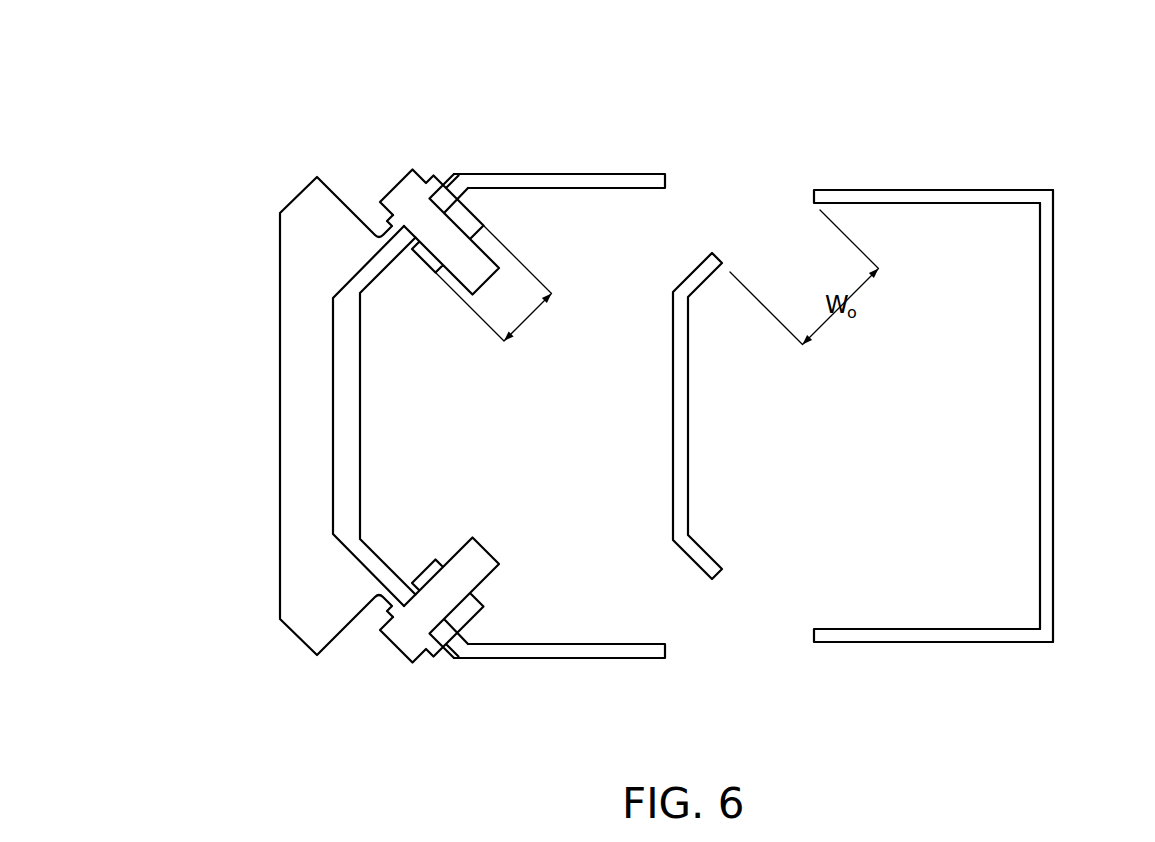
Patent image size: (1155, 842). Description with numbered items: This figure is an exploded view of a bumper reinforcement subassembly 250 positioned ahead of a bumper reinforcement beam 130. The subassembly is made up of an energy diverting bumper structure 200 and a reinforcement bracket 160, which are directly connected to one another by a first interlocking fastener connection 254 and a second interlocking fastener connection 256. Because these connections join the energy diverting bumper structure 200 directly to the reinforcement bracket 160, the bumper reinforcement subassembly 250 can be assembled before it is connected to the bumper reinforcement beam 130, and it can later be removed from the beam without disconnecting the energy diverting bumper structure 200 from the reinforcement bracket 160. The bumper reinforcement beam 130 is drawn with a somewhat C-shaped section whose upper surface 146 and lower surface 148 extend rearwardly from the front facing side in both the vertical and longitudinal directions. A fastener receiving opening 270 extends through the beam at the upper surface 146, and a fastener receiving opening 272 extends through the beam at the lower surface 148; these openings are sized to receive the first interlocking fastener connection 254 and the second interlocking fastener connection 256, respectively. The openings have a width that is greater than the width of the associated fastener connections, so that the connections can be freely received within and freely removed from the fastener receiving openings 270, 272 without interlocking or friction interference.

The energy diverting bumper structure 200 is at (326, 426).
The bumper reinforcement subassembly 250 is at (292, 384).
The first interlocking fastener connection 254 is at (443, 207).
The second interlocking fastener connection 256 is at (439, 659).
The reinforcement bracket 160 is at (559, 120).
The upper surface 146 is at (690, 272).
The lower surface 148 is at (690, 562).
The bumper reinforcement beam 130 is at (1045, 412).
The fastener receiving opening 270 is at (925, 144).
The fastener receiving opening 272 is at (926, 689).